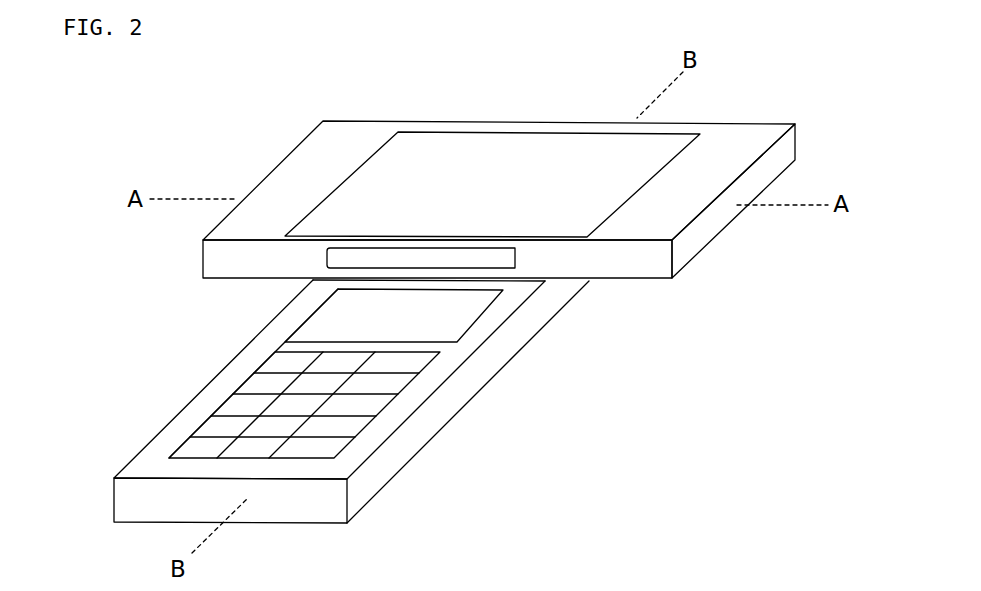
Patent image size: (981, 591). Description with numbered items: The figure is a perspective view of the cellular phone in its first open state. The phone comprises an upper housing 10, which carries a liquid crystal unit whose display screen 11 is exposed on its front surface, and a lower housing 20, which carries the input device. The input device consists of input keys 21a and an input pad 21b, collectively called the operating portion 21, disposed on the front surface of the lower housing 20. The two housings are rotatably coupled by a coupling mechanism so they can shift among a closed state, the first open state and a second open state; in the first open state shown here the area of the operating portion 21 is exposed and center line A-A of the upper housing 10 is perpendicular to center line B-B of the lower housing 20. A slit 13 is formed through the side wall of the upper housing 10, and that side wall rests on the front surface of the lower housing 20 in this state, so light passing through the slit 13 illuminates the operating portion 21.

The upper housing 10 is at (742, 128).
The display screen 11 is at (453, 140).
The slit 13 is at (505, 262).
The lower housing 20 is at (470, 398).
The operating portion 21 is at (288, 373).
The input keys 21a is at (245, 402).
The input pad 21b is at (323, 322).